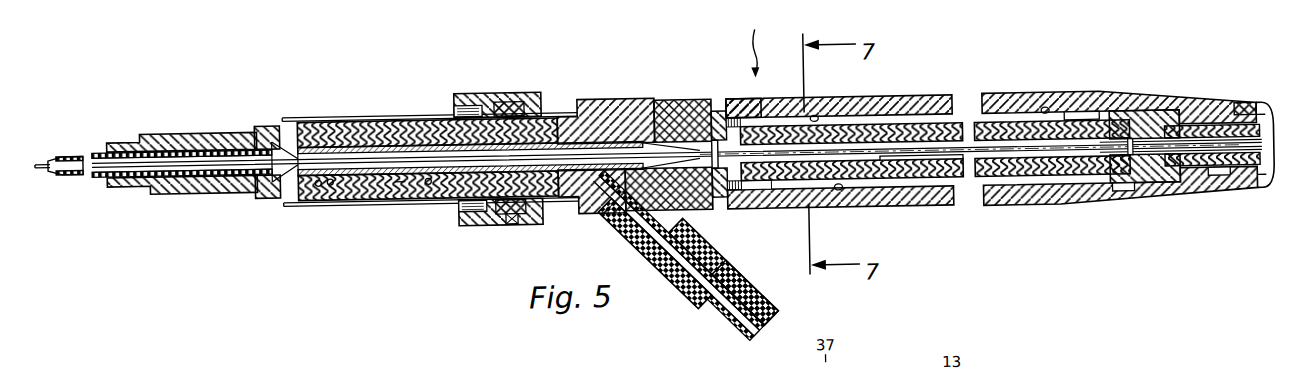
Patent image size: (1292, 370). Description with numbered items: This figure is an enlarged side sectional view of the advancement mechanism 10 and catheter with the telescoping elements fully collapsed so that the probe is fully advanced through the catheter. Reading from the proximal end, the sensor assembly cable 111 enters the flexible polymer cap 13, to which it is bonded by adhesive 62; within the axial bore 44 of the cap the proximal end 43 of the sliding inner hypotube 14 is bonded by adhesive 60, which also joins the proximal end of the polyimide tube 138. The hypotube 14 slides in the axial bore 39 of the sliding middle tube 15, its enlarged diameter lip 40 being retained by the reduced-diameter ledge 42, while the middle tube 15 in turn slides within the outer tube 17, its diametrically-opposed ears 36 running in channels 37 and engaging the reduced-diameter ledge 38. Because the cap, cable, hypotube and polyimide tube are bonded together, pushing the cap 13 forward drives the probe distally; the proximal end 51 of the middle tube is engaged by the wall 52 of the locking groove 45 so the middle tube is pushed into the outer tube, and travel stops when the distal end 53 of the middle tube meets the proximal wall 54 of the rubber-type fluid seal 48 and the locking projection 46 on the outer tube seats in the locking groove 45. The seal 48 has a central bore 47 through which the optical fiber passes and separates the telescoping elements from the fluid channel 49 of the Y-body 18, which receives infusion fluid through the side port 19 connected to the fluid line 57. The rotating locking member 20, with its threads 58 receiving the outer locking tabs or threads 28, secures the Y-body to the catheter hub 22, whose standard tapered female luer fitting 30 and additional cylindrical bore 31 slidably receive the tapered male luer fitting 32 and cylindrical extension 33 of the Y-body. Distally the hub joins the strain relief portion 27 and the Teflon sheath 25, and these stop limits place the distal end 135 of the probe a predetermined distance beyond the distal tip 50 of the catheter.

The advancement mechanism 10 is at (755, 45).
The cap 13 is at (1119, 81).
The sliding inner hypotube 14 is at (676, 103).
The sliding middle tube 15 is at (934, 109).
The outer tube 17 is at (839, 129).
The Y-body 18 is at (606, 128).
The side port 19 is at (679, 252).
The rotating locking member 20 is at (497, 77).
The catheter hub 22 is at (275, 137).
The Teflon sheath 25 is at (172, 199).
The strain relief portion 27 is at (182, 140).
The outer locking tabs or threads 28 is at (501, 234).
The tapered female luer fitting 30 is at (426, 214).
The cylindrical bore 31 is at (341, 213).
The tapered male luer fitting 32 is at (393, 217).
The cylindrical extension 33 is at (311, 220).
The ears 36 is at (741, 146).
The channels 37 is at (831, 153).
The reduced-diameter ledge 38 is at (1120, 209).
The axial bore 39 is at (922, 206).
The enlarged diameter lip 40 is at (754, 89).
The reduced-diameter ledge 42 is at (1140, 112).
The proximal end of the hypotube 43 is at (1212, 177).
The axial bore 44 is at (1180, 105).
The inner locking groove 45 is at (1037, 77).
The locking projection 46 is at (1081, 80).
The central bore 47 is at (668, 133).
The fluid seal 48 is at (666, 119).
The fluid channel 49 is at (469, 114).
The distal tip of the catheter 50 is at (63, 144).
The proximal end of the middle tube 51 is at (1138, 103).
The wall 52 is at (1129, 211).
The distal end of the middle tube 53 is at (701, 125).
The proximal wall of the seal 54 is at (767, 210).
The fluid line 57 is at (735, 304).
The threads 58 is at (518, 243).
The adhesive 60 is at (1219, 199).
The adhesive 62 is at (1259, 164).
The sensor assembly cable 111 is at (1247, 85).
The distal end of the probe 135 is at (50, 192).
The polyimide tube 138 is at (427, 137).